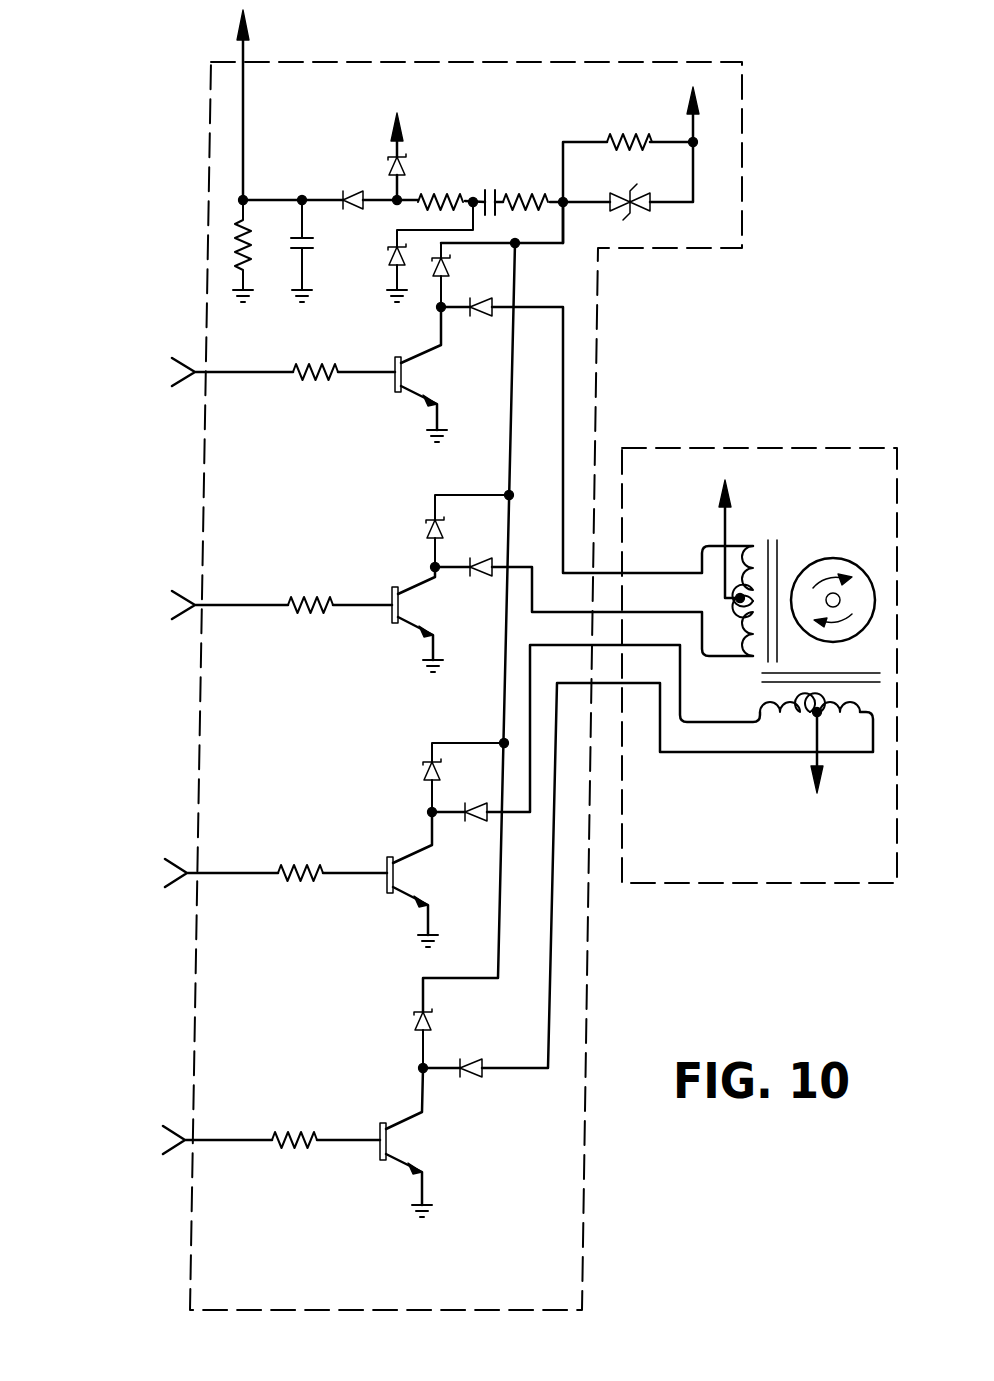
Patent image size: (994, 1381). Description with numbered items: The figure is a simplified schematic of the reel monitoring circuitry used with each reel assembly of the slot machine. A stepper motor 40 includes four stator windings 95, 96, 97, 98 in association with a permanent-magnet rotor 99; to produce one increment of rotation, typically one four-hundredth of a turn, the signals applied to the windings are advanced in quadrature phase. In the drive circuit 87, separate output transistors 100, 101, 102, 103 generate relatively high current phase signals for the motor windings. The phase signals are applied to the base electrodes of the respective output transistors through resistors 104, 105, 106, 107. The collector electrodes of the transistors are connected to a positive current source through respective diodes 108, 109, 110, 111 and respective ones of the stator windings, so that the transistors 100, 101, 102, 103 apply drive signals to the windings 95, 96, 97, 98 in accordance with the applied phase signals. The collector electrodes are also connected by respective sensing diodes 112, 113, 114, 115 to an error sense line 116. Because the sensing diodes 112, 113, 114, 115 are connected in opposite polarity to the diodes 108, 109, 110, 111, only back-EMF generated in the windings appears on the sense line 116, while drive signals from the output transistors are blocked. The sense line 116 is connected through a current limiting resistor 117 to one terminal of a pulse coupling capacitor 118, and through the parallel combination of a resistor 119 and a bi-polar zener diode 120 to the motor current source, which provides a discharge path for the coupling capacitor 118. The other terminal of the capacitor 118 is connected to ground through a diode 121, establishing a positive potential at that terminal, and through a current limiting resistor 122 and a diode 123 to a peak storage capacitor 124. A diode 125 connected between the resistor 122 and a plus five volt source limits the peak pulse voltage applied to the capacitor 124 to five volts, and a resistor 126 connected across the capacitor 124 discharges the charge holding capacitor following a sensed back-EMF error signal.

The stepper motor 40 is at (753, 884).
The drive circuit 87 is at (209, 167).
The stator winding 95 is at (758, 549).
The stator winding 96 is at (730, 650).
The stator winding 97 is at (787, 713).
The stator winding 98 is at (841, 713).
The permanent-magnet rotor 99 is at (833, 558).
The output transistor 100 is at (394, 360).
The output transistor 101 is at (392, 590).
The output transistor 102 is at (388, 860).
The output transistor 103 is at (380, 1125).
The resistor 104 is at (313, 386).
The resistor 105 is at (310, 616).
The resistor 106 is at (298, 884).
The resistor 107 is at (292, 1152).
The diode 108 is at (484, 317).
The diode 109 is at (479, 582).
The diode 110 is at (473, 826).
The diode 111 is at (475, 1082).
The sensing diode 112 is at (452, 271).
The sensing diode 113 is at (428, 530).
The sensing diode 114 is at (425, 770).
The sensing diode 115 is at (416, 1024).
The error sense line 116 is at (511, 443).
The current limiting resistor 117 is at (528, 193).
The pulse coupling capacitor 118 is at (490, 190).
The resistor 119 is at (630, 140).
The bi-polar zener diode 120 is at (620, 173).
The diode 121 is at (390, 256).
The current limiting resistor 122 is at (447, 192).
The diode 123 is at (342, 193).
The peak storage capacitor 124 is at (306, 250).
The diode 125 is at (390, 166).
The resistor 126 is at (247, 258).